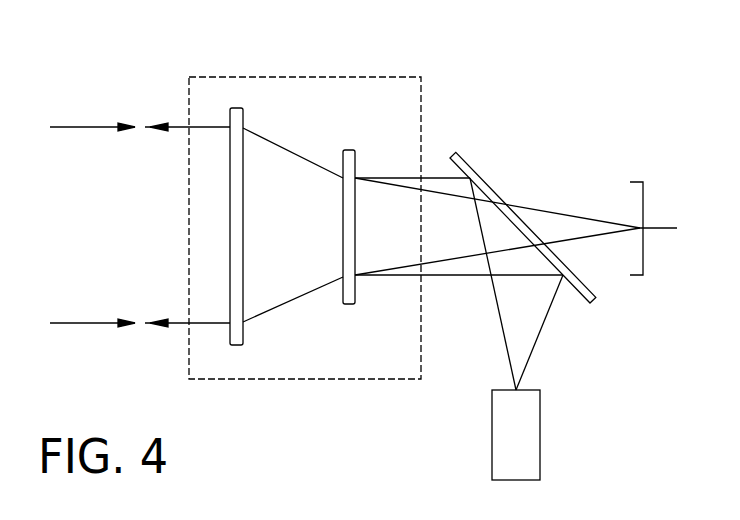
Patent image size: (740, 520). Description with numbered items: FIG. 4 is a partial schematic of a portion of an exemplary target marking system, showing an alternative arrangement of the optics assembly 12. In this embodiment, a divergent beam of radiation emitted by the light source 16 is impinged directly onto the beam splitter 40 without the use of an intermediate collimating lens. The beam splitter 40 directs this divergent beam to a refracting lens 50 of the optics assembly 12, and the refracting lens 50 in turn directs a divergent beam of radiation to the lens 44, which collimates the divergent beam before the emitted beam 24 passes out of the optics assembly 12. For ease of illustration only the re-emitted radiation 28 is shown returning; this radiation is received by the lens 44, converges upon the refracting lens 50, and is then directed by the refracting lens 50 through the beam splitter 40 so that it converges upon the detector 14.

The optics assembly 12 is at (395, 77).
The detector 14 is at (636, 181).
The light source 16 is at (540, 433).
The emitted beam 24 is at (175, 127).
The re-emitted radiation 28 is at (70, 126).
The beam splitter 40 is at (470, 162).
The lens 44 is at (236, 108).
The refracting lens 50 is at (348, 150).